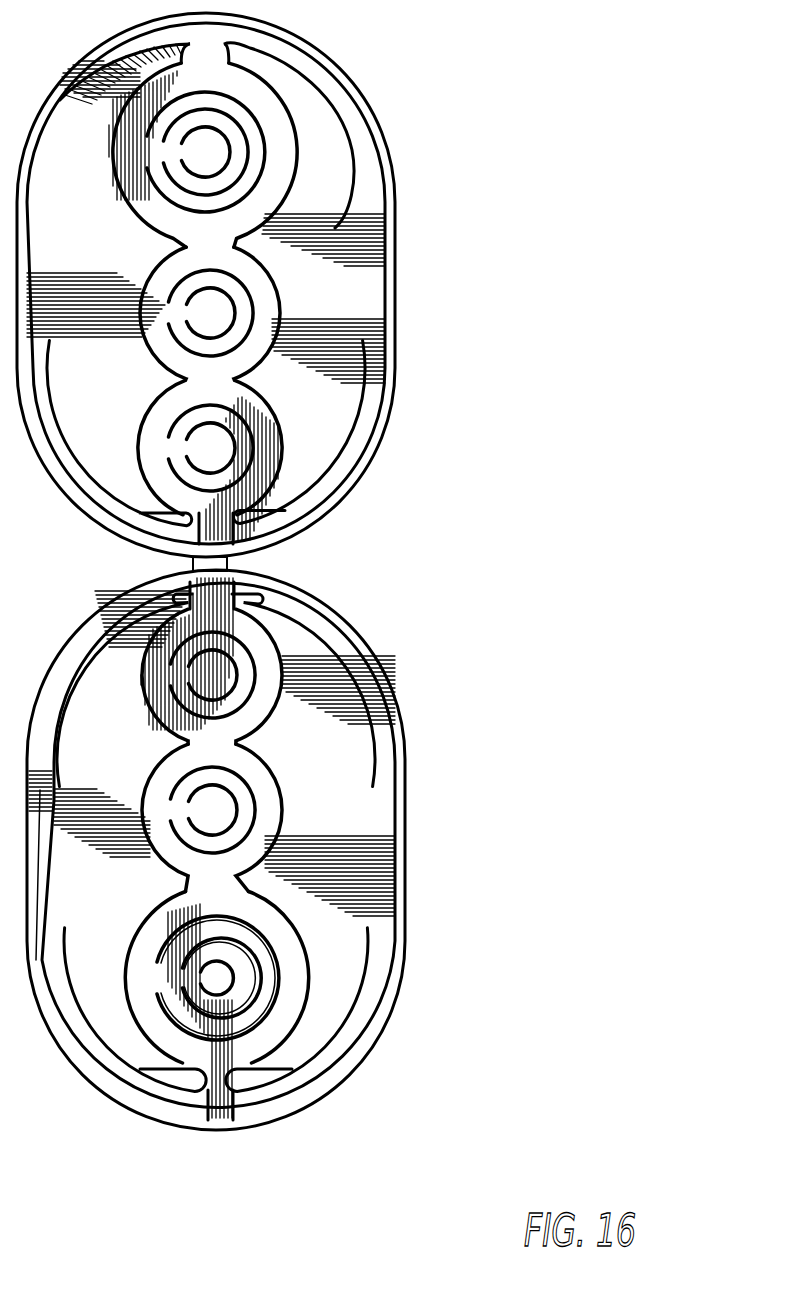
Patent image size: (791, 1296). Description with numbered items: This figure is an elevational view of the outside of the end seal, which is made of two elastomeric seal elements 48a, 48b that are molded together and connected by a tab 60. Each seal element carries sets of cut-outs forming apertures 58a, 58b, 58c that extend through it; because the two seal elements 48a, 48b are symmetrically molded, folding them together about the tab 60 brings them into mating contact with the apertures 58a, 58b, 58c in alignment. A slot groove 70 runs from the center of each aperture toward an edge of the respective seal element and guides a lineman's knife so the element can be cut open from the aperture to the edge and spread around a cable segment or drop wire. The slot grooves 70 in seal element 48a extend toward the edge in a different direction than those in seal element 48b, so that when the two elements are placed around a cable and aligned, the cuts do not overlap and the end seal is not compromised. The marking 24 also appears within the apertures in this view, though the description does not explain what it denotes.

The elastomeric seal element 48a is at (392, 142).
The elastomeric seal element 48b is at (407, 895).
The aperture 58a is at (130, 198).
The aperture 58b is at (165, 349).
The aperture 58c is at (165, 418).
The tab 60 is at (228, 564).
The slot groove 70 is at (137, 148).
The inner ring 24 is at (209, 561).